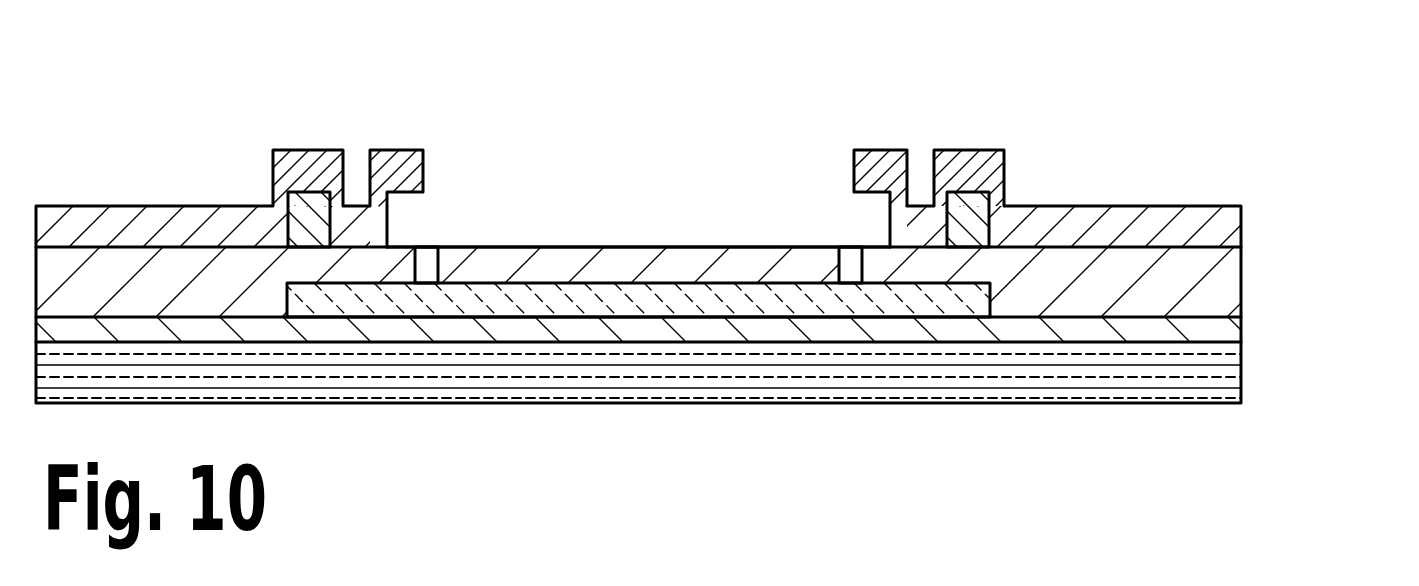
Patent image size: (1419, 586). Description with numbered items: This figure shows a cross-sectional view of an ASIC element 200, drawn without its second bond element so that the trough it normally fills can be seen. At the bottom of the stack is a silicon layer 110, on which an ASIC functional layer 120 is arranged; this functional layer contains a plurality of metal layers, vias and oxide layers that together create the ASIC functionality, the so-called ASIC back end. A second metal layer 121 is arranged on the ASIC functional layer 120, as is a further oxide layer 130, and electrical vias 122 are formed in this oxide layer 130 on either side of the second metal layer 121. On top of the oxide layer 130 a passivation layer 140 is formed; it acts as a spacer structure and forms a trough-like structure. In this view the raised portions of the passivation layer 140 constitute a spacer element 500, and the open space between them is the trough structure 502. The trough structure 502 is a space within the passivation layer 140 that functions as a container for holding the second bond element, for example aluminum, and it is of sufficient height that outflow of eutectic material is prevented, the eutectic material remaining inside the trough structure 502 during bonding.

The ASIC element 200 is at (128, 185).
The silicon layer 110 is at (1228, 382).
The ASIC functional layer 120 is at (1228, 330).
The second metal layer 121 is at (628, 303).
The electrical vias 122 is at (440, 263).
The further oxide layer 130 is at (1228, 273).
The passivation layer 140 is at (1243, 223).
The spacer element 500 is at (398, 150).
The trough structure 502 is at (632, 205).